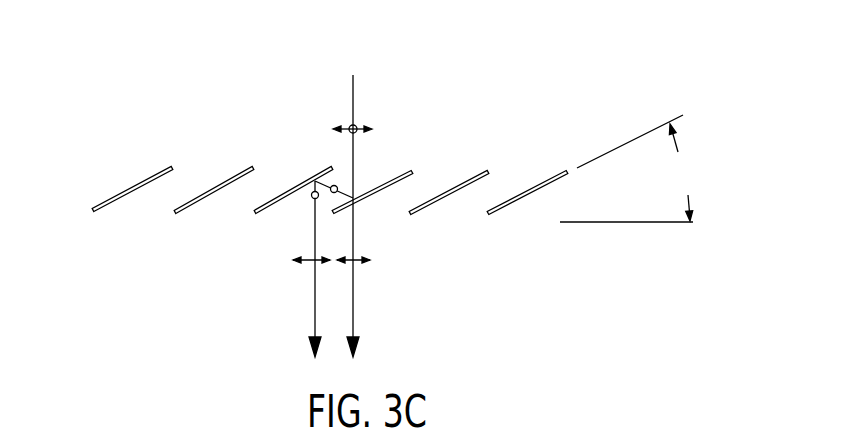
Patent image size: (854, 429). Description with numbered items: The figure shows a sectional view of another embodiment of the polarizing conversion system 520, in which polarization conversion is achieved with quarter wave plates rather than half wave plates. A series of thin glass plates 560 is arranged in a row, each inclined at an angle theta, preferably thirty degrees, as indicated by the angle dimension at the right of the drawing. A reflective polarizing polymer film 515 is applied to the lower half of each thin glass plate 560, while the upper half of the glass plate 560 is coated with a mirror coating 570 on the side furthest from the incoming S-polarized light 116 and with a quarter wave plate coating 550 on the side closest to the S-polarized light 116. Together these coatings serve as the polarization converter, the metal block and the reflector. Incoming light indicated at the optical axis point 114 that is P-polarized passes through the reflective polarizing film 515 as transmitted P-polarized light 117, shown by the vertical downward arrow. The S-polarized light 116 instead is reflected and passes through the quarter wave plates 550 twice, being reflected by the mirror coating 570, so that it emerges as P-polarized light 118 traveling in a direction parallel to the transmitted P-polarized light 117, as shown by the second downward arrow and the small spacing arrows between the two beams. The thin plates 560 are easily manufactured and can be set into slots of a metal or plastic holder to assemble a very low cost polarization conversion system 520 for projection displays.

The polarizing conversion system 520 is at (592, 85).
The quarter wave plate 550 is at (295, 192).
The mirror coating 570 is at (293, 188).
The thin glass plate 560 is at (417, 165).
The S-polarized light 116 is at (331, 172).
The reflective polarizing polymer film 515 is at (353, 197).
The reference point on optical axis 114 is at (353, 104).
The transmitted P-polarized light 117 is at (355, 317).
The P-polarized light 118 is at (313, 317).